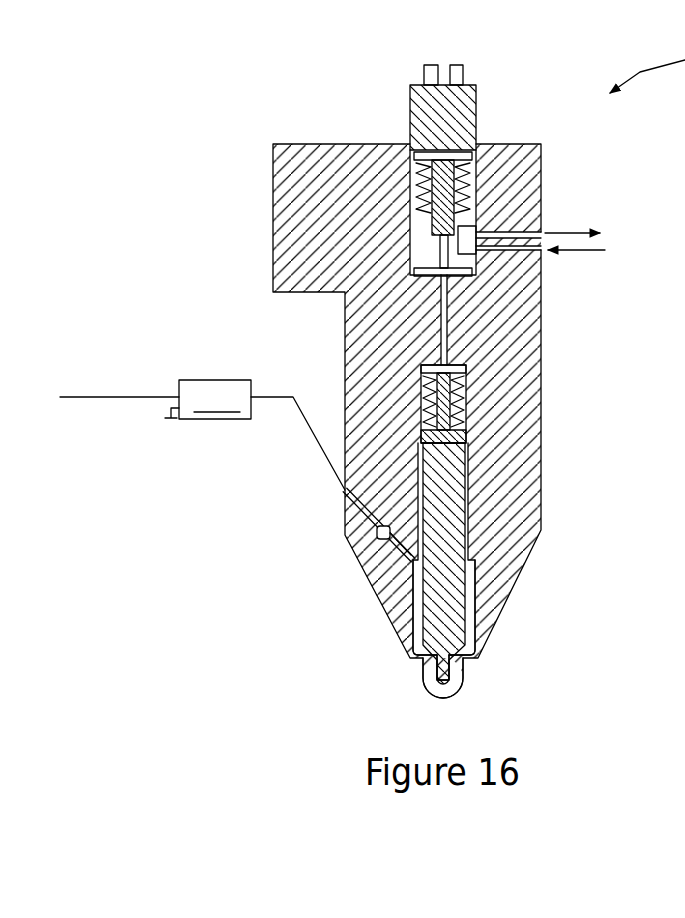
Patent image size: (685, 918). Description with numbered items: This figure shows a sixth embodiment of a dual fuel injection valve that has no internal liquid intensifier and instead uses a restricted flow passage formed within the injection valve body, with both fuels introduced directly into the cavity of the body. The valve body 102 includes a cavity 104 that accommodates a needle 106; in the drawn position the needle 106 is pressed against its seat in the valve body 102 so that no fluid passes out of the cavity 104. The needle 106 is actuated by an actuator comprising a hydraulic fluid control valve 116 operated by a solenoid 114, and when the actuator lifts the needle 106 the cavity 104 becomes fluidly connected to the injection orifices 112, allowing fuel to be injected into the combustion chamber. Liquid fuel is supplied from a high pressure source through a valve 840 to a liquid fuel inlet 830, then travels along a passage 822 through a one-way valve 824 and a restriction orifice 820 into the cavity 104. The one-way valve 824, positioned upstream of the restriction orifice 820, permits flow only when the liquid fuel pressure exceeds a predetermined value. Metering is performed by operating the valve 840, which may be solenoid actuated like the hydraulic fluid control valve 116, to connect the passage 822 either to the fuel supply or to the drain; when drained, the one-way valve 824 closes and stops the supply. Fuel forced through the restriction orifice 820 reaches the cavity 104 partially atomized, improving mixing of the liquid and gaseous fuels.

The valve body 102 is at (543, 181).
The cavity 104 is at (470, 600).
The needle 106 is at (447, 513).
The injection orifices 112 is at (455, 666).
The solenoid 114 is at (452, 128).
The hydraulic fluid control valve 116 is at (541, 204).
The restriction orifice 820 is at (397, 563).
The passage 822 is at (345, 503).
The one-way valve 824 is at (377, 533).
The liquid fuel inlet 830 is at (345, 490).
The valve 840 is at (155, 399).